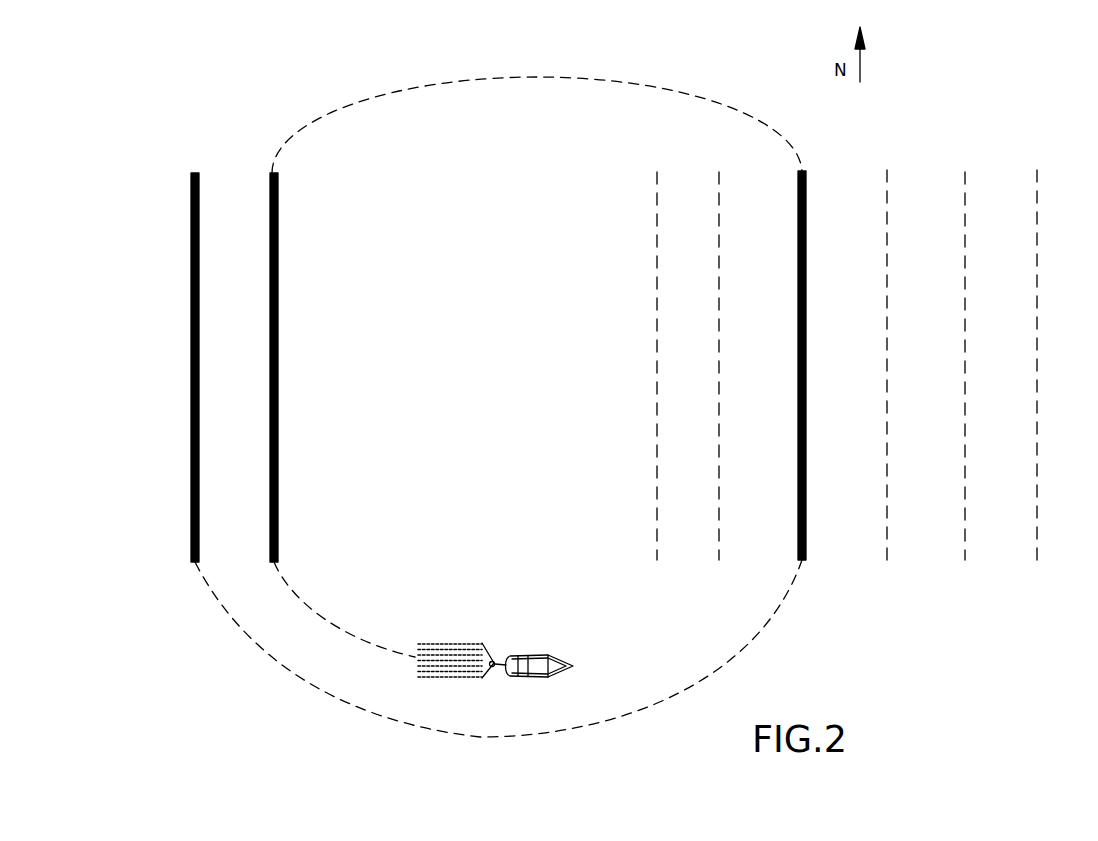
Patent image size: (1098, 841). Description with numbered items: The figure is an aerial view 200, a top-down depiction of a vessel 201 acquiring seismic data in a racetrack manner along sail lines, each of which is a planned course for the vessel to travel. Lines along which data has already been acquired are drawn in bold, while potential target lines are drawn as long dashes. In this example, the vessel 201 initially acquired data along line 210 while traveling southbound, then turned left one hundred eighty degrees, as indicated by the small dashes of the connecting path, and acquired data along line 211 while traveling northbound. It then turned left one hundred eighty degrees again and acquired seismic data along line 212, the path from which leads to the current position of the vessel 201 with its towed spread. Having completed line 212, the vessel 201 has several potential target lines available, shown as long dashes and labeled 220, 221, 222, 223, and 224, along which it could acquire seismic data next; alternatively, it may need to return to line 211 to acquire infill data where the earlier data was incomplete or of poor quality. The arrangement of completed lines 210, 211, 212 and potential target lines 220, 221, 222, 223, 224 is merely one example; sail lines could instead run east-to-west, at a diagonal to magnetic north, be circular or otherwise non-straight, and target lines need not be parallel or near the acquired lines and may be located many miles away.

The aerial view 200 is at (943, 106).
The vessel 201 is at (544, 678).
The line 210 is at (191, 195).
The line 211 is at (806, 184).
The line 212 is at (278, 197).
The potential target line 220 is at (652, 177).
The potential target line 221 is at (718, 178).
The potential target line 222 is at (887, 176).
The potential target line 223 is at (965, 178).
The potential target line 224 is at (1037, 187).